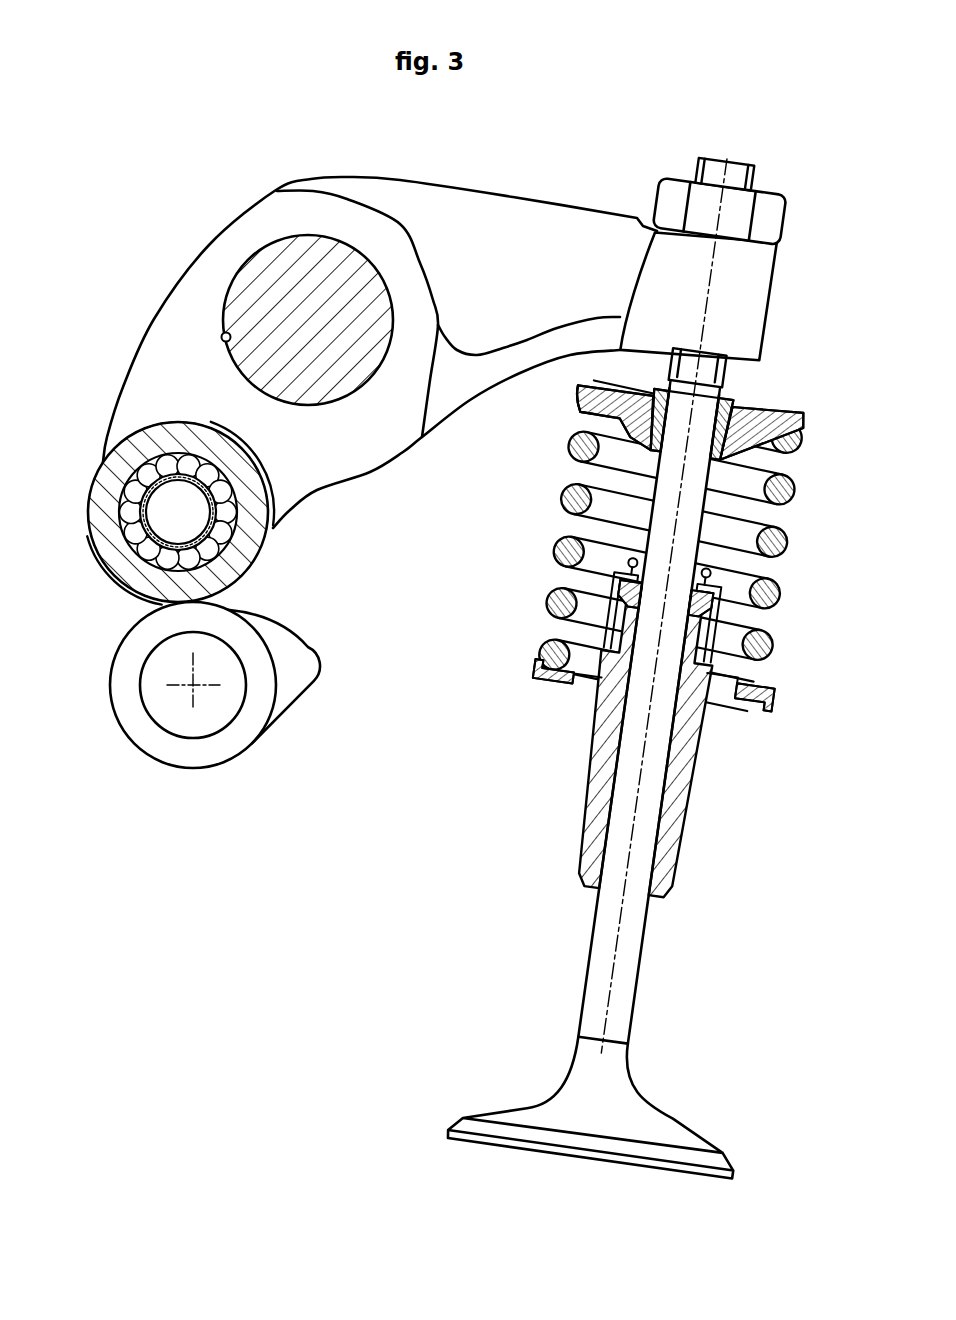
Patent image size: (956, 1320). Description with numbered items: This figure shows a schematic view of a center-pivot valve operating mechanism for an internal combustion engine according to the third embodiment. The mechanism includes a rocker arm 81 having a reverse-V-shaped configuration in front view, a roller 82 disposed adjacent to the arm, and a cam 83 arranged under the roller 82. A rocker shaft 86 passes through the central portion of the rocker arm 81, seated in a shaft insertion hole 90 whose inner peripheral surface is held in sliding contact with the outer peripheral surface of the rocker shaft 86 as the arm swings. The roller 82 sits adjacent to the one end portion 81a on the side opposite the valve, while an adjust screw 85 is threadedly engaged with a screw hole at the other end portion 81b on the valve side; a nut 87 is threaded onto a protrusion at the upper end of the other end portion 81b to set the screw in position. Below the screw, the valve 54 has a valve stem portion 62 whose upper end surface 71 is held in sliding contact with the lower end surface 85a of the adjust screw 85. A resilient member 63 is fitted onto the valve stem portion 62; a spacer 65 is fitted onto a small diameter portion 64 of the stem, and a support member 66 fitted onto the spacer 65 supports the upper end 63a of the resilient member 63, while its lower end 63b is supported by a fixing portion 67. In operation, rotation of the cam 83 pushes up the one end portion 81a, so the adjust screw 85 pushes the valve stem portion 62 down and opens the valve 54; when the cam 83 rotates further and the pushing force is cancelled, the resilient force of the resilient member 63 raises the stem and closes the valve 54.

The valve 54 is at (582, 936).
The valve stem portion 62 is at (612, 820).
The resilient member 63 is at (779, 633).
The upper end of the resilient member 63a is at (580, 414).
The lower end of the resilient member 63b is at (760, 687).
The small diameter portion 64 is at (704, 397).
The spacer 65 is at (656, 398).
The support member 66 is at (768, 411).
The fixing portion 67 is at (541, 661).
The upper end surface of the valve stem portion 71 is at (711, 358).
The rocker arm 81 is at (506, 196).
The one end portion of the rocker arm 81a is at (100, 538).
The other end portion of the rocker arm 81b is at (773, 286).
The roller 82 is at (258, 568).
The cam 83 is at (294, 688).
The adjust screw 85 is at (746, 162).
The lower end surface of the adjust screw 85a is at (678, 352).
The rocker shaft 86 is at (252, 283).
The nut 87 is at (767, 212).
The shaft insertion hole 90 is at (222, 334).